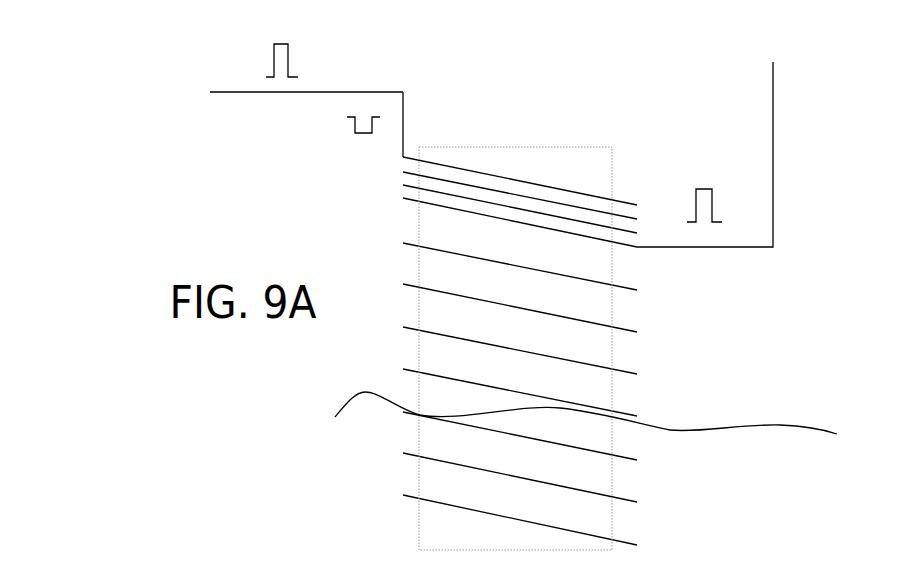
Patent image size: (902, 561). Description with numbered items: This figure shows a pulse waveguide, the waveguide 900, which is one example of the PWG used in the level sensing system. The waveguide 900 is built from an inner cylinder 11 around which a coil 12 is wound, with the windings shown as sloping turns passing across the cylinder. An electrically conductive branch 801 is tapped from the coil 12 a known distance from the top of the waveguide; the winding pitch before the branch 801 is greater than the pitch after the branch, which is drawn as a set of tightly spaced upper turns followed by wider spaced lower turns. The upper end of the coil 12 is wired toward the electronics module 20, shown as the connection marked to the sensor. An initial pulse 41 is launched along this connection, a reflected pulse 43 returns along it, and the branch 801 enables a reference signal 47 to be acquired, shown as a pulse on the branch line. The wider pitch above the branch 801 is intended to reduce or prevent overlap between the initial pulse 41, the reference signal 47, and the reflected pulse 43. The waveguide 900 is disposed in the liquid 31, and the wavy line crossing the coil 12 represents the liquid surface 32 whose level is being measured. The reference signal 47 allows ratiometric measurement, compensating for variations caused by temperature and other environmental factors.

The waveguide 900 is at (627, 55).
The electronics module 20 is at (260, 93).
The initial pulse 41 is at (301, 51).
The reflected pulse 43 is at (337, 125).
The reference signal 47 is at (720, 171).
The branch 801 is at (779, 153).
The coil 12 is at (633, 345).
The inner cylinder 11 is at (412, 475).
The liquid surface 32 is at (352, 383).
The liquid 31 is at (753, 454).